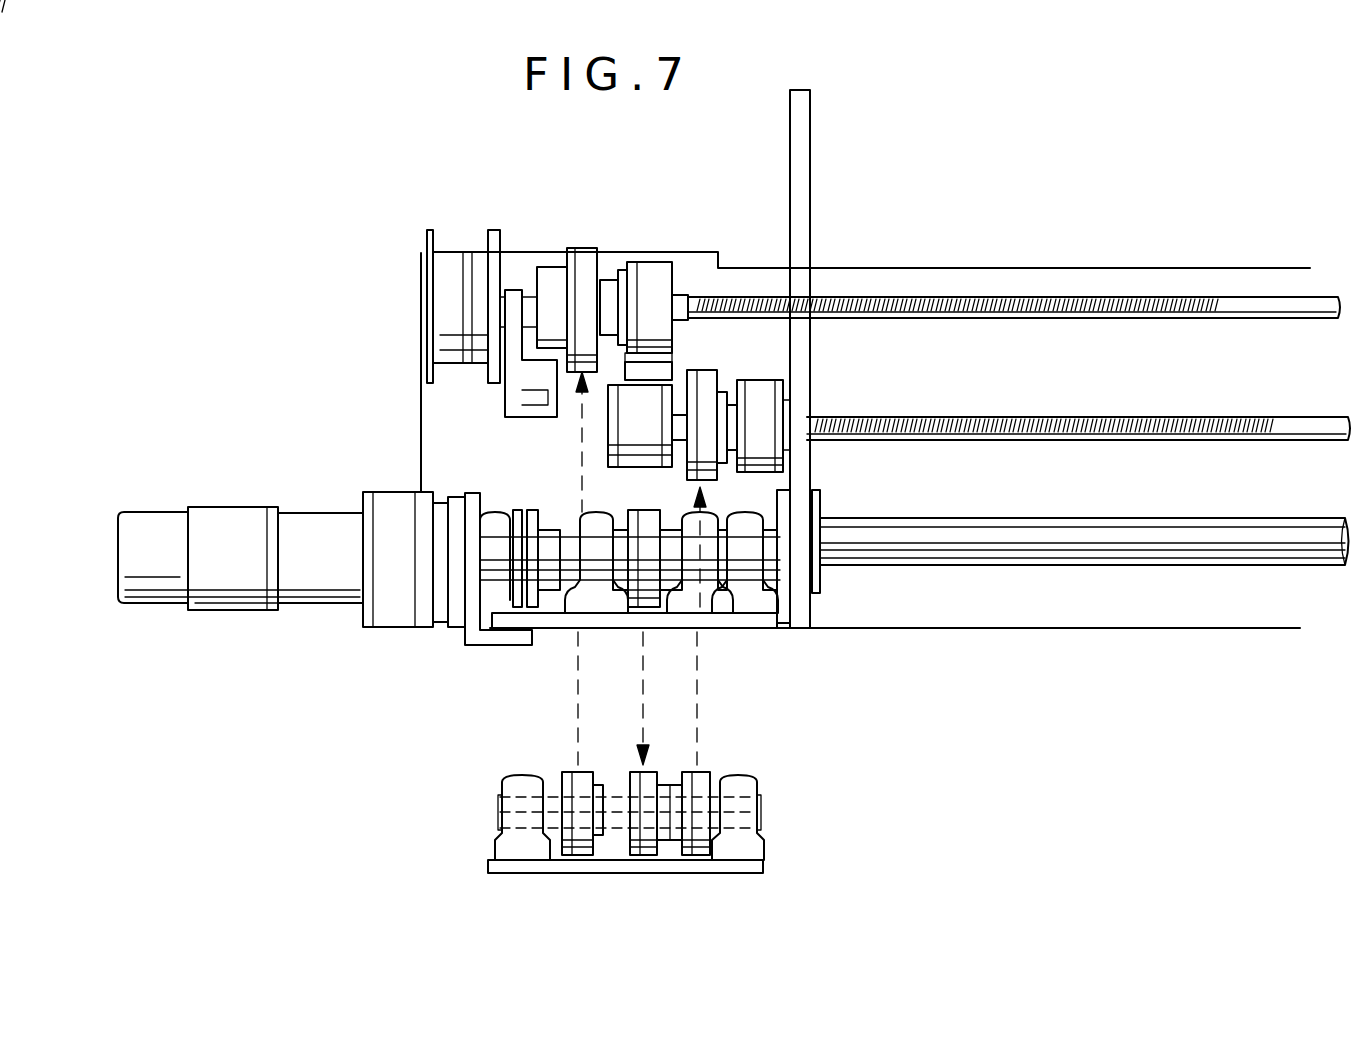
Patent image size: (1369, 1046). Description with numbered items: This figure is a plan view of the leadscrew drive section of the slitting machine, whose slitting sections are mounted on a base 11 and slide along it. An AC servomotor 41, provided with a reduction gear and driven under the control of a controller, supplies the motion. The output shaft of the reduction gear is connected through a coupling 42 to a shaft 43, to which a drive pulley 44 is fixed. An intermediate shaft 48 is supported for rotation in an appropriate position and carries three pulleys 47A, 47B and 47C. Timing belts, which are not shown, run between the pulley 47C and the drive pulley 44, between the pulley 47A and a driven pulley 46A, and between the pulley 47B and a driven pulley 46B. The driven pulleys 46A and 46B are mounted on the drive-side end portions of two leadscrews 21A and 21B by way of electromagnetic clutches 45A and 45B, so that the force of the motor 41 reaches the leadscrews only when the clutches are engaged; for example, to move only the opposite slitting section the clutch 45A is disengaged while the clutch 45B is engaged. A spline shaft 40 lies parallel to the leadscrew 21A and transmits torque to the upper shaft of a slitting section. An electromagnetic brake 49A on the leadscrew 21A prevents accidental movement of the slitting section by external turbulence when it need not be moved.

The base 11 is at (1070, 630).
The leadscrew 21A is at (1240, 320).
The leadscrew 21B is at (1212, 440).
The spline shaft 40 is at (1248, 548).
The AC servomotor 41 is at (250, 592).
The coupling 42 is at (517, 507).
The shaft 43 is at (624, 550).
The drive pulley 44 is at (647, 533).
The electromagnetic clutch 45A is at (655, 275).
The electromagnetic clutch 45B is at (770, 395).
The driven pulley 46A is at (585, 270).
The driven pulley 46B is at (702, 382).
The pulley 47A is at (577, 845).
The pulley 47B is at (695, 840).
The pulley 47C is at (643, 845).
The intermediate shaft 48 is at (553, 810).
The electromagnetic brake 49A is at (445, 275).